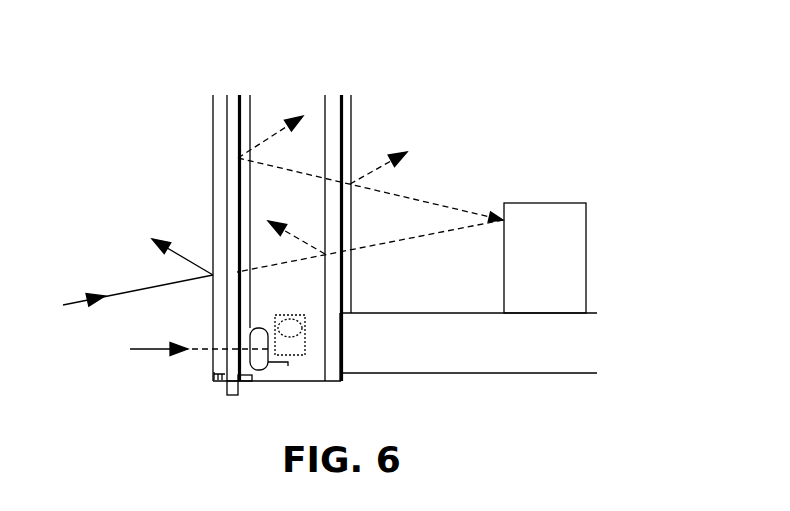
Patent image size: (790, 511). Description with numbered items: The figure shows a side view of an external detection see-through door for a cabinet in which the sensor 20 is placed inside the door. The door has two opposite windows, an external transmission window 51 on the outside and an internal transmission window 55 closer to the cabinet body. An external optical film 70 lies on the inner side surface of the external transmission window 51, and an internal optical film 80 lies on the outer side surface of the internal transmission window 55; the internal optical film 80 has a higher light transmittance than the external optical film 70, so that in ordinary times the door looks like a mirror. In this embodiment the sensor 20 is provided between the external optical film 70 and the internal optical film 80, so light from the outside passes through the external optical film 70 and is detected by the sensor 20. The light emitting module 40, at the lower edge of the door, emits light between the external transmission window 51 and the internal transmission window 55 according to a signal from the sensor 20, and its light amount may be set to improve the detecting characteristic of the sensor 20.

The external transmission window 51 is at (213, 130).
The external optical film 70 is at (232, 228).
The internal transmission window 55 is at (330, 115).
The internal optical film 80 is at (346, 123).
The sensor 20 is at (262, 368).
The light emitting module 40 is at (298, 356).